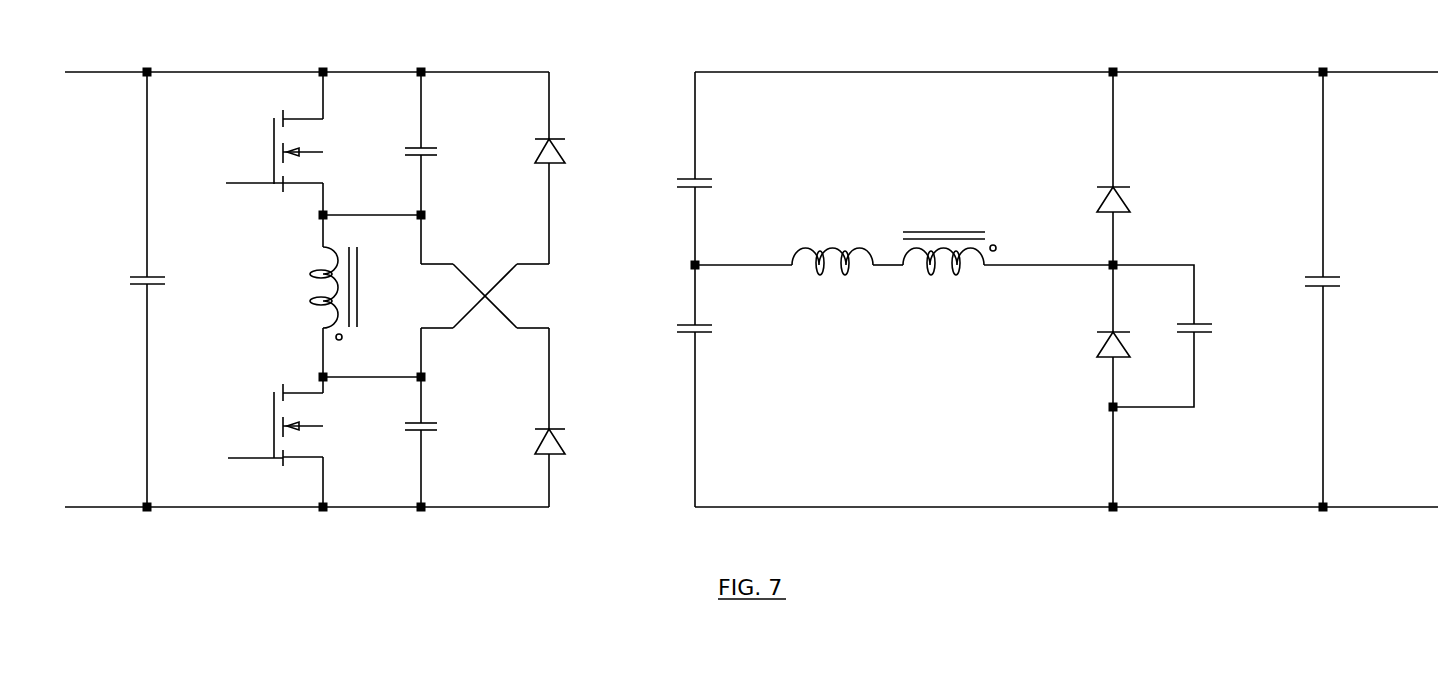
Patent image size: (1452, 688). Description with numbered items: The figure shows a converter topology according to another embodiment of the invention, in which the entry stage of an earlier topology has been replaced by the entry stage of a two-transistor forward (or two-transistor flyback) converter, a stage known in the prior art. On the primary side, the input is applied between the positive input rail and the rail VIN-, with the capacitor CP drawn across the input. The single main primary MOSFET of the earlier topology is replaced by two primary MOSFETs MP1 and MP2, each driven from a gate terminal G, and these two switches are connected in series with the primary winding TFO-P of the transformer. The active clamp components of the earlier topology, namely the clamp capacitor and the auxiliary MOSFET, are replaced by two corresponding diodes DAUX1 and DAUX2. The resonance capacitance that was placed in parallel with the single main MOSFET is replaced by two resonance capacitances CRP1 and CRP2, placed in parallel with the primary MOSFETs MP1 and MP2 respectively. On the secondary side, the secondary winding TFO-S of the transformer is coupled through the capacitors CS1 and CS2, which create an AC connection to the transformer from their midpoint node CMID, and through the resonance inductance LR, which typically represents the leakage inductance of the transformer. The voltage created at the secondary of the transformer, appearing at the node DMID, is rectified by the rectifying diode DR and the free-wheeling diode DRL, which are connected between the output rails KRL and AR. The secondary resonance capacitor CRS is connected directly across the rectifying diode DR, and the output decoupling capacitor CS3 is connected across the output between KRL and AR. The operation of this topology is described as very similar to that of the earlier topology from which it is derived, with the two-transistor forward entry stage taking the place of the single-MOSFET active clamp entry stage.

The negative input voltage rail VIN- is at (307, 493).
The primary-side input capacitor CP is at (180, 289).
The primary MOSFET MP2 is at (327, 143).
The primary MOSFET MP1 is at (327, 442).
The gate terminal G is at (245, 320).
The primary winding of the transformer TFO-P is at (343, 296).
The resonance capacitance CRP2 is at (447, 143).
The resonance capacitance CRP1 is at (447, 442).
The diode DAUX1 is at (586, 168).
The diode DAUX2 is at (586, 417).
The output positive rail KRL is at (1066, 58).
The output return rail AR is at (1066, 495).
The capacitor CS2 is at (722, 168).
The capacitor CS1 is at (722, 386).
The capacitor midpoint node CMID is at (743, 251).
The resonance inductance LR is at (832, 261).
The secondary winding of the transformer TFO-S is at (949, 243).
The diode midpoint node DMID is at (1048, 251).
The free-wheeling diode DRL is at (1139, 168).
The rectifying diode DR is at (1134, 386).
The secondary resonance capacitor CRS is at (1188, 336).
The output decoupling capacitor CS3 is at (1340, 289).